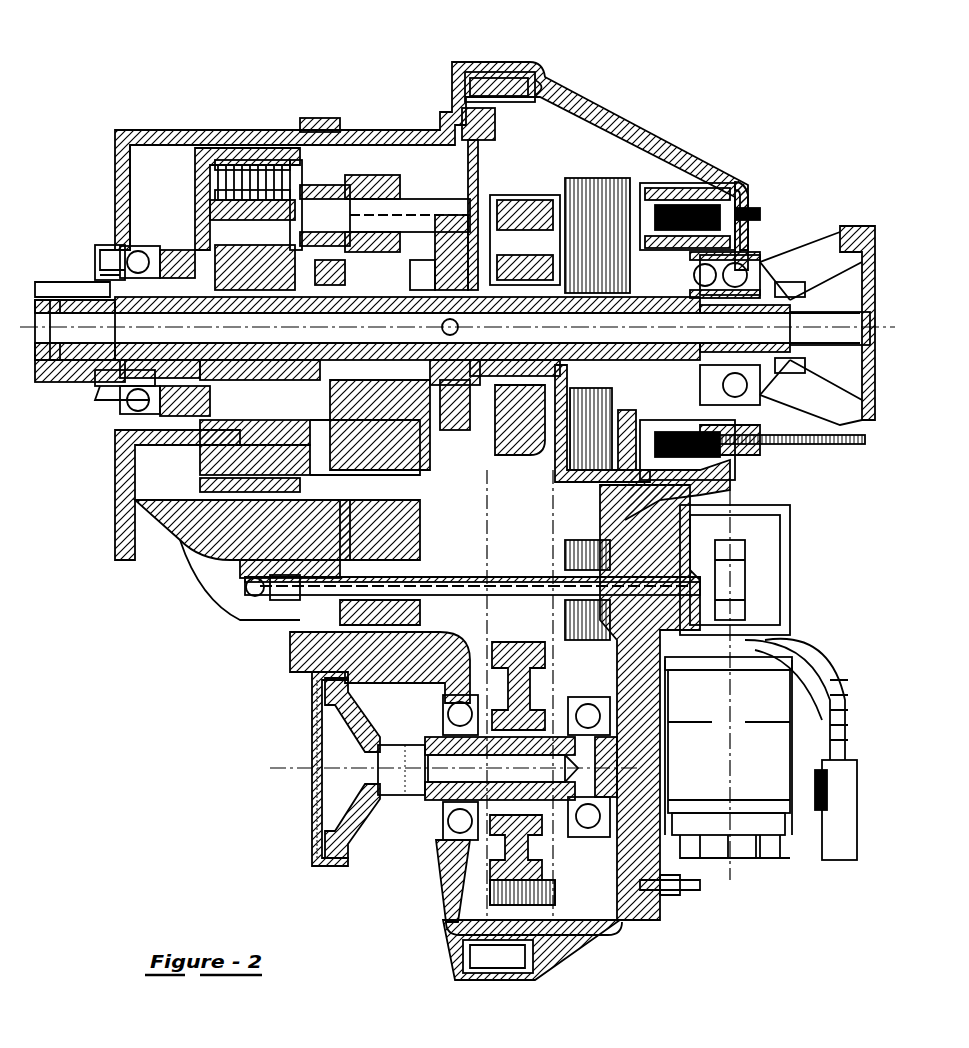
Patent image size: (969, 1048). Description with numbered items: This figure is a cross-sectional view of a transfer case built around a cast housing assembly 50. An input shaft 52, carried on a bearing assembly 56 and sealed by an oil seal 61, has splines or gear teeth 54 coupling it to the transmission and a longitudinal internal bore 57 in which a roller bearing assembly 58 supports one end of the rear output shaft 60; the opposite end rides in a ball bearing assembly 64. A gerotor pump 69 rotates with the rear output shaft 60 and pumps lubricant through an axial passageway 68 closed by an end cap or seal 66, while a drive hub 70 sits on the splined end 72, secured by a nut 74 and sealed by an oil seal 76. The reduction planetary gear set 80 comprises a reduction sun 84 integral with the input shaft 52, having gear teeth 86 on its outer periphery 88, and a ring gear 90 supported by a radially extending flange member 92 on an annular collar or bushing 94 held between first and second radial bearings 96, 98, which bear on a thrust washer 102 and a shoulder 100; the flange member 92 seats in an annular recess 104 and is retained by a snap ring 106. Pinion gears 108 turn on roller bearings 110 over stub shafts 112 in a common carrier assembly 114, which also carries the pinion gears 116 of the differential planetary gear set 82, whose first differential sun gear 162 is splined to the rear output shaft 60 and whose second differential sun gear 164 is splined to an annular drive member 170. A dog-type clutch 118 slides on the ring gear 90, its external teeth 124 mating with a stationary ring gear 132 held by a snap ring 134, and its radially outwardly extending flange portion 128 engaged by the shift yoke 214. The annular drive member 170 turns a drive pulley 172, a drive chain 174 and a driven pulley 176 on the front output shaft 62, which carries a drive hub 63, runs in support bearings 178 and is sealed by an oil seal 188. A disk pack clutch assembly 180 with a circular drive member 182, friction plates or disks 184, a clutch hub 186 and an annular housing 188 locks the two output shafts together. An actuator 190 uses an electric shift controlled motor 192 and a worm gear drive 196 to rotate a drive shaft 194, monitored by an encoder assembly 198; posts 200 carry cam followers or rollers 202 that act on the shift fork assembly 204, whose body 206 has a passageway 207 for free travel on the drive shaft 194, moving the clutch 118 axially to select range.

The housing assembly 50 is at (282, 137).
The input shaft 52 is at (45, 306).
The splines or gear teeth 54 is at (52, 282).
The bearing assembly 56 is at (120, 404).
The longitudinal internal bore 57 is at (82, 260).
The roller bearing assembly 58 is at (96, 384).
The rear output shaft 60 is at (365, 460).
The oil seal 61 is at (100, 245).
The front output shaft 62 is at (440, 860).
The drive hub 63 is at (350, 870).
The ball bearing assembly 64 is at (745, 257).
The end cap or seal 66 is at (98, 327).
The axial passageway 68 is at (510, 337).
The gerotor pump 69 is at (449, 215).
The drive hub 70 is at (848, 227).
The splined end 72 is at (760, 275).
The nut 74 is at (805, 292).
The oil seal 76 is at (778, 442).
The reduction planetary gear set 80 is at (180, 180).
The differential planetary gear set 82 is at (344, 168).
The reduction sun 84 is at (215, 185).
The gear teeth 86 is at (215, 550).
The outer periphery 88 is at (211, 435).
The ring gear 90 is at (215, 520).
The radially extending flange member 92 is at (209, 465).
The annular collar or bushing 94 is at (178, 430).
The first radial bearing 96 is at (176, 407).
The second radial bearing 98 is at (210, 327).
The shoulder 100 is at (290, 327).
The thrust washer 102 is at (120, 327).
The annular recess 104 is at (220, 522).
The snap ring 106 is at (220, 500).
The pinion gears 108 is at (276, 202).
The roller bearings 110 is at (260, 165).
The stub shafts 112 is at (276, 193).
The common carrier assembly 114 is at (330, 595).
The pinion gears 116 is at (385, 178).
The clutch 118 is at (332, 175).
The external teeth 124 is at (242, 200).
The radially outwardly extending flange portion 128 is at (319, 118).
The stationary ring gear 132 is at (262, 560).
The snap ring 134 is at (282, 570).
The first differential sun gear 162 is at (315, 266).
The second differential sun gear 164 is at (458, 198).
The annular drive member 170 is at (562, 140).
The drive pulley 172 is at (548, 225).
The drive chain 174 is at (535, 890).
The driven pulley 176 is at (503, 808).
The support bearings 178 is at (455, 880).
The disk pack clutch assembly 180 is at (575, 205).
The circular drive member 182 is at (710, 192).
The friction plates or disks 184 is at (638, 198).
The clutch hub 186 is at (671, 201).
The annular housing 188 is at (597, 178).
The actuator 190 is at (821, 877).
The electric shift controlled motor 192 is at (760, 850).
The drive shaft 194 is at (538, 598).
The worm gear drive 196 is at (745, 562).
The encoder assembly 198 is at (700, 490).
The posts 200 is at (320, 640).
The cam followers or rollers 202 is at (330, 635).
The shift fork assembly 204 is at (400, 530).
The body 206 is at (370, 602).
The passageway 207 is at (477, 602).
The shift yoke 214 is at (305, 580).